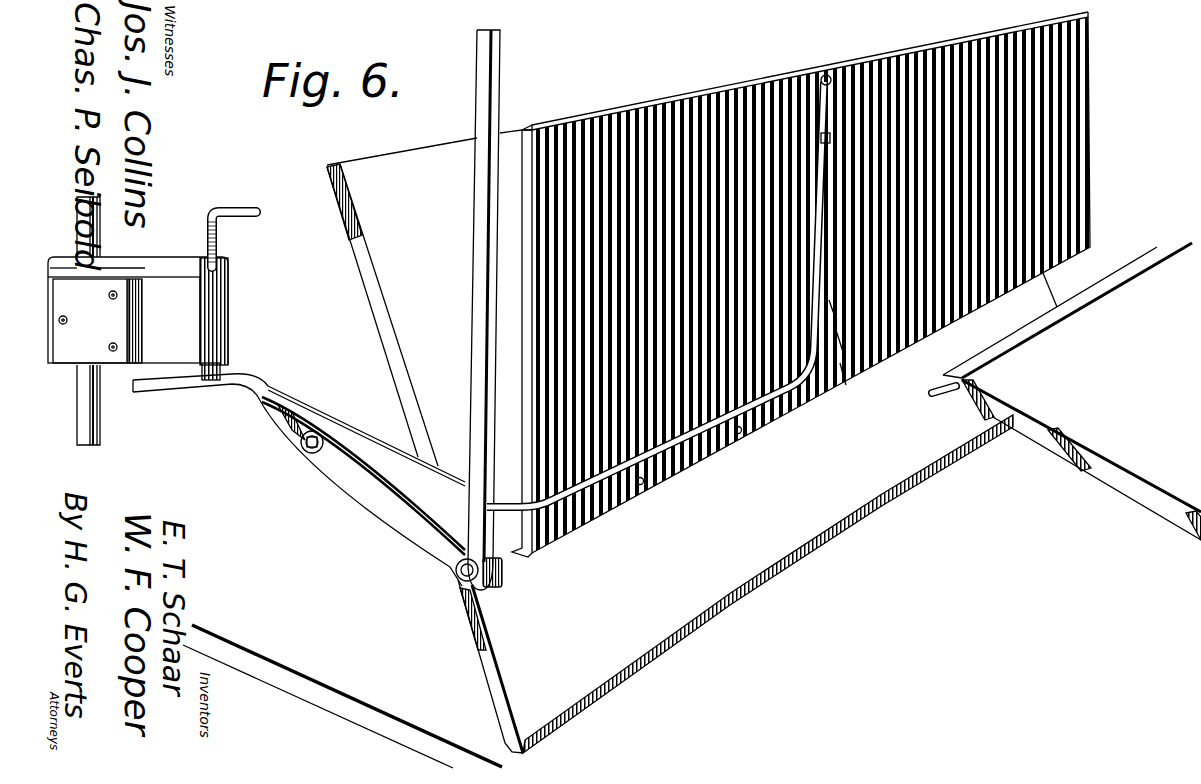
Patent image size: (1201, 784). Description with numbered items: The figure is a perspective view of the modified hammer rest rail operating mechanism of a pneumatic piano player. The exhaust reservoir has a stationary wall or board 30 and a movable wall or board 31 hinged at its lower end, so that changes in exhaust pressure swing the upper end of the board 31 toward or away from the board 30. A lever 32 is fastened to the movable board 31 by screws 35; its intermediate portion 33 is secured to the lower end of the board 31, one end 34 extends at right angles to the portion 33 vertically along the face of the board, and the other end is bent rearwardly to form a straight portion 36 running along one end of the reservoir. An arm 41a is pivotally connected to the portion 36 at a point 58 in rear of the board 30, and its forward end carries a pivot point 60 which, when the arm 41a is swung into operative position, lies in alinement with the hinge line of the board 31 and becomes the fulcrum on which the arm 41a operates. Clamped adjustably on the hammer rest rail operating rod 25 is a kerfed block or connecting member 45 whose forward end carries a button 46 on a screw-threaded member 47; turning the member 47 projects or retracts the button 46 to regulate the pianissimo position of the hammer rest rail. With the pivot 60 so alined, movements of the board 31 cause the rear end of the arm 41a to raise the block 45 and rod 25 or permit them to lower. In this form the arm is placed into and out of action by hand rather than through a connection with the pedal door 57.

The hammer rest rail operating rod 25 is at (98, 247).
The stationary wall or board 30 is at (598, 591).
The movable wall or board 31 is at (523, 360).
The lever 32 is at (643, 484).
The intermediate portion 33 is at (738, 434).
The end of the lever 34 is at (826, 76).
The screws 35 is at (845, 380).
The rearwardly-extending portion 36 is at (367, 447).
The arm 41a is at (370, 490).
The block or connecting member 45 is at (138, 311).
The button 46 is at (221, 371).
The screw-threaded member 47 is at (233, 208).
The pedal door 57 is at (1066, 391).
The pivot point 58 is at (306, 450).
The pivot point 60 is at (463, 580).